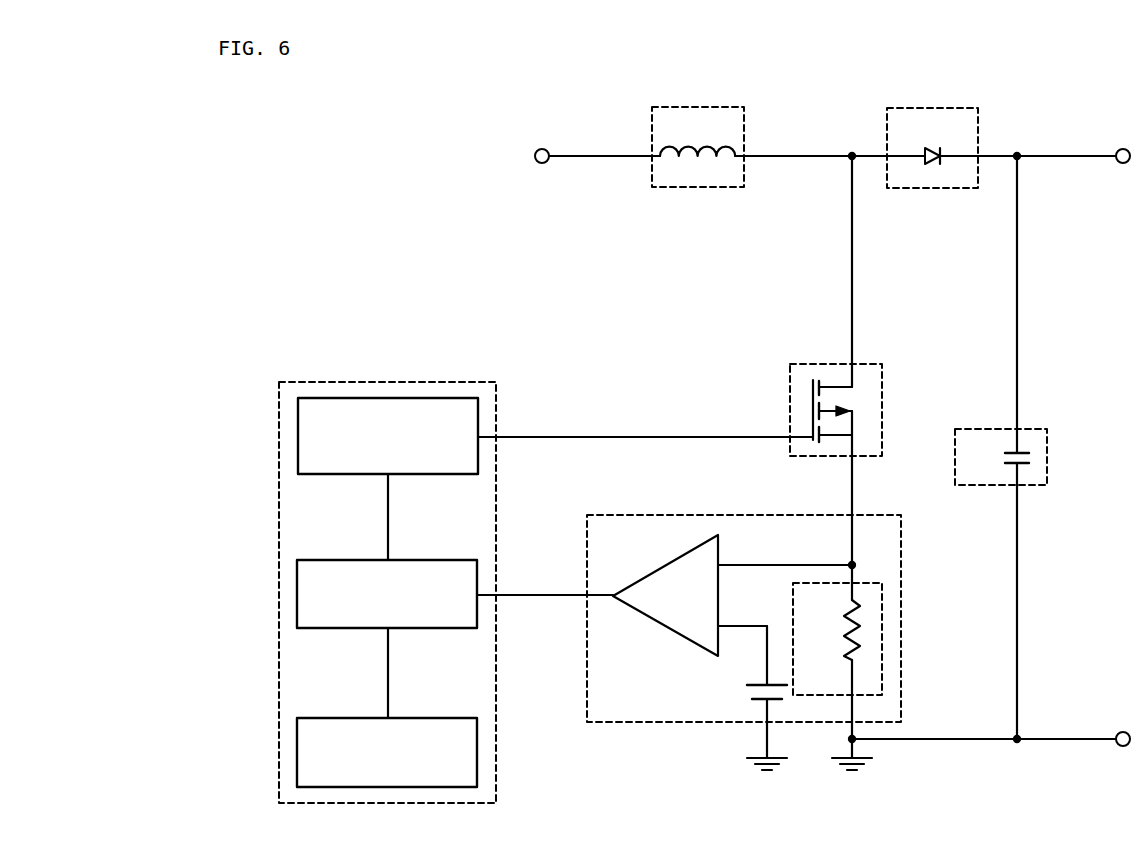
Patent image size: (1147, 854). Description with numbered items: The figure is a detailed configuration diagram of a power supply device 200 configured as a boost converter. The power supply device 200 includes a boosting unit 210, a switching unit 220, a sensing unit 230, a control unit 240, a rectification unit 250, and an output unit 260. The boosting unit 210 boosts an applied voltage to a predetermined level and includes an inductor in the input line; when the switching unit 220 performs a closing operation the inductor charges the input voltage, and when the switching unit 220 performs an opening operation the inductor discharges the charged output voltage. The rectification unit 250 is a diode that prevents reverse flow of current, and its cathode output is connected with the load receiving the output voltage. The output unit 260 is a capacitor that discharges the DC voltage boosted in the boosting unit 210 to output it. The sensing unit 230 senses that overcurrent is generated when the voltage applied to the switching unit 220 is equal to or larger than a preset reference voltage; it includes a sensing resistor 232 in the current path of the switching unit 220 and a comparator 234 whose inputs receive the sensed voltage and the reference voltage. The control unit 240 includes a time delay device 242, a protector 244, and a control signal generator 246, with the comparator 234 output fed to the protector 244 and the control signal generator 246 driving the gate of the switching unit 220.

The power supply device 200 is at (254, 109).
The boosting unit 210 is at (692, 188).
The switching unit 220 is at (882, 392).
The sensing unit 230 is at (901, 560).
The sensing resistor 232 is at (882, 640).
The comparator 234 is at (688, 643).
The control unit 240 is at (388, 382).
The time delay device 242 is at (297, 752).
The protector 244 is at (297, 594).
The control signal generator 246 is at (298, 436).
The rectification unit 250 is at (935, 188).
The output unit 260 is at (955, 472).